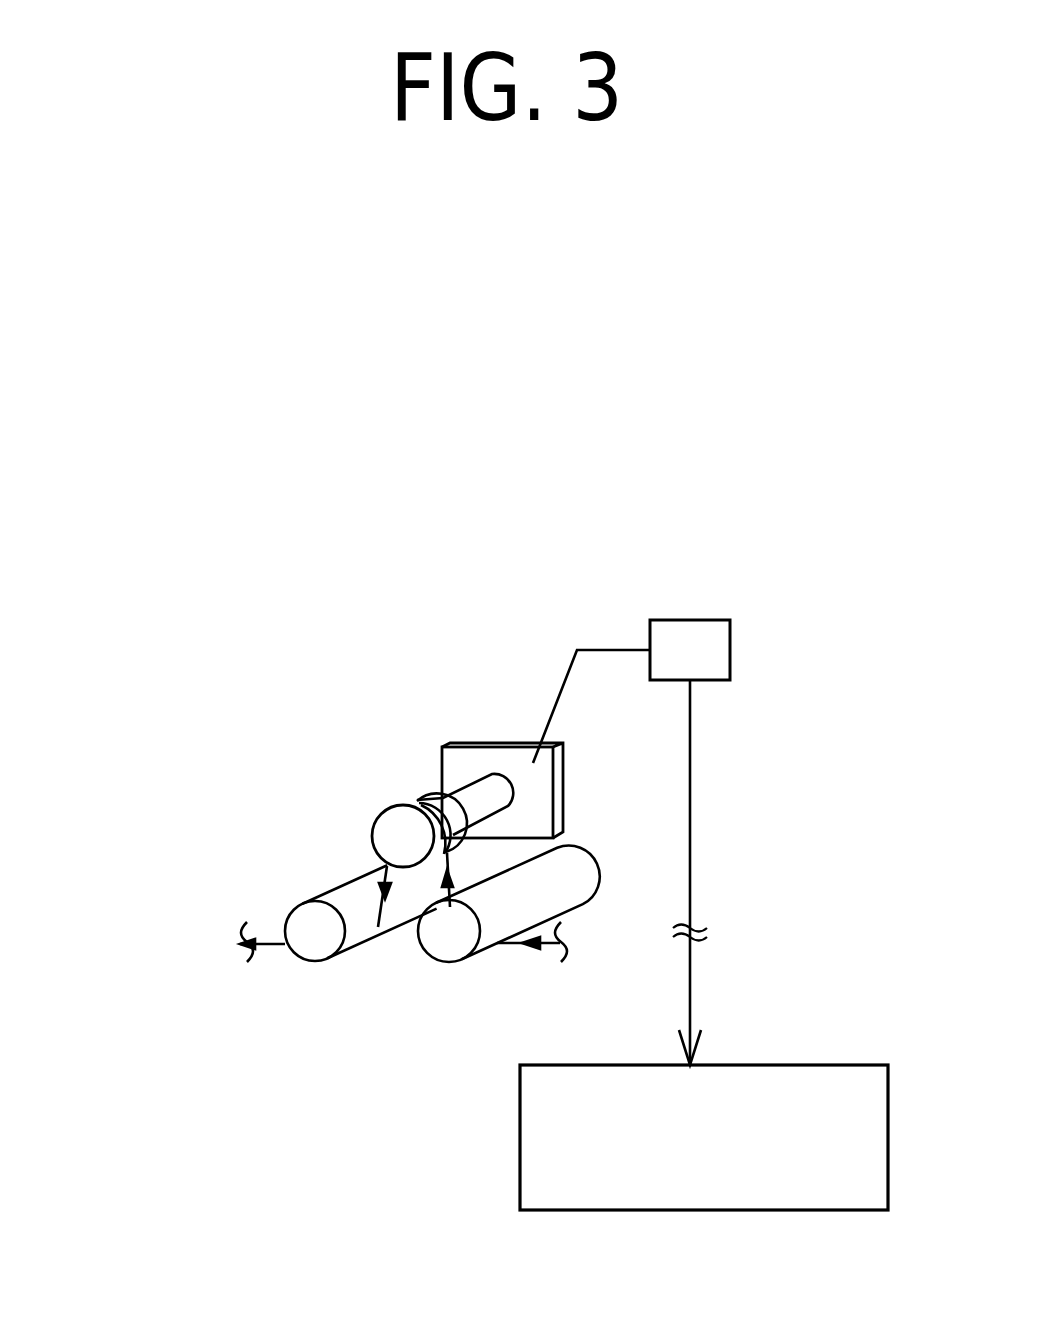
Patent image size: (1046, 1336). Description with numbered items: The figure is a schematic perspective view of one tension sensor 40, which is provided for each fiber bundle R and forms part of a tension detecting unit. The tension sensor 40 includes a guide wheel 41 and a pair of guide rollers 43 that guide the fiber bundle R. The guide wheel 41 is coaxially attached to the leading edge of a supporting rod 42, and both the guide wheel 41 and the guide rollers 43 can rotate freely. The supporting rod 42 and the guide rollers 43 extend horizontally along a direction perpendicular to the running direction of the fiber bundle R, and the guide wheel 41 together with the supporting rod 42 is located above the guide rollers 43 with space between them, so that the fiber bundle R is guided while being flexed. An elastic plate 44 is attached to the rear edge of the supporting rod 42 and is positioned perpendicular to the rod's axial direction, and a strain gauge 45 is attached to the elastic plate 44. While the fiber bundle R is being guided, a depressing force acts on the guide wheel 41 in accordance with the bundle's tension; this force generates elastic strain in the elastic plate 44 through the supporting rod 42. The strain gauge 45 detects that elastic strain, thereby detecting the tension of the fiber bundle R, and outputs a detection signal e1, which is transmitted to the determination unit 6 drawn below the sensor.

The tension sensor 40 is at (247, 677).
The guide wheel 41 is at (387, 827).
The supporting rod 42 is at (466, 802).
The guide rollers 43 is at (347, 897).
The elastic plate 44 is at (540, 800).
The strain gauge 45 is at (715, 640).
The determination unit 6 is at (775, 1063).
The detection signal e1 is at (692, 850).
The fiber bundle R is at (500, 944).